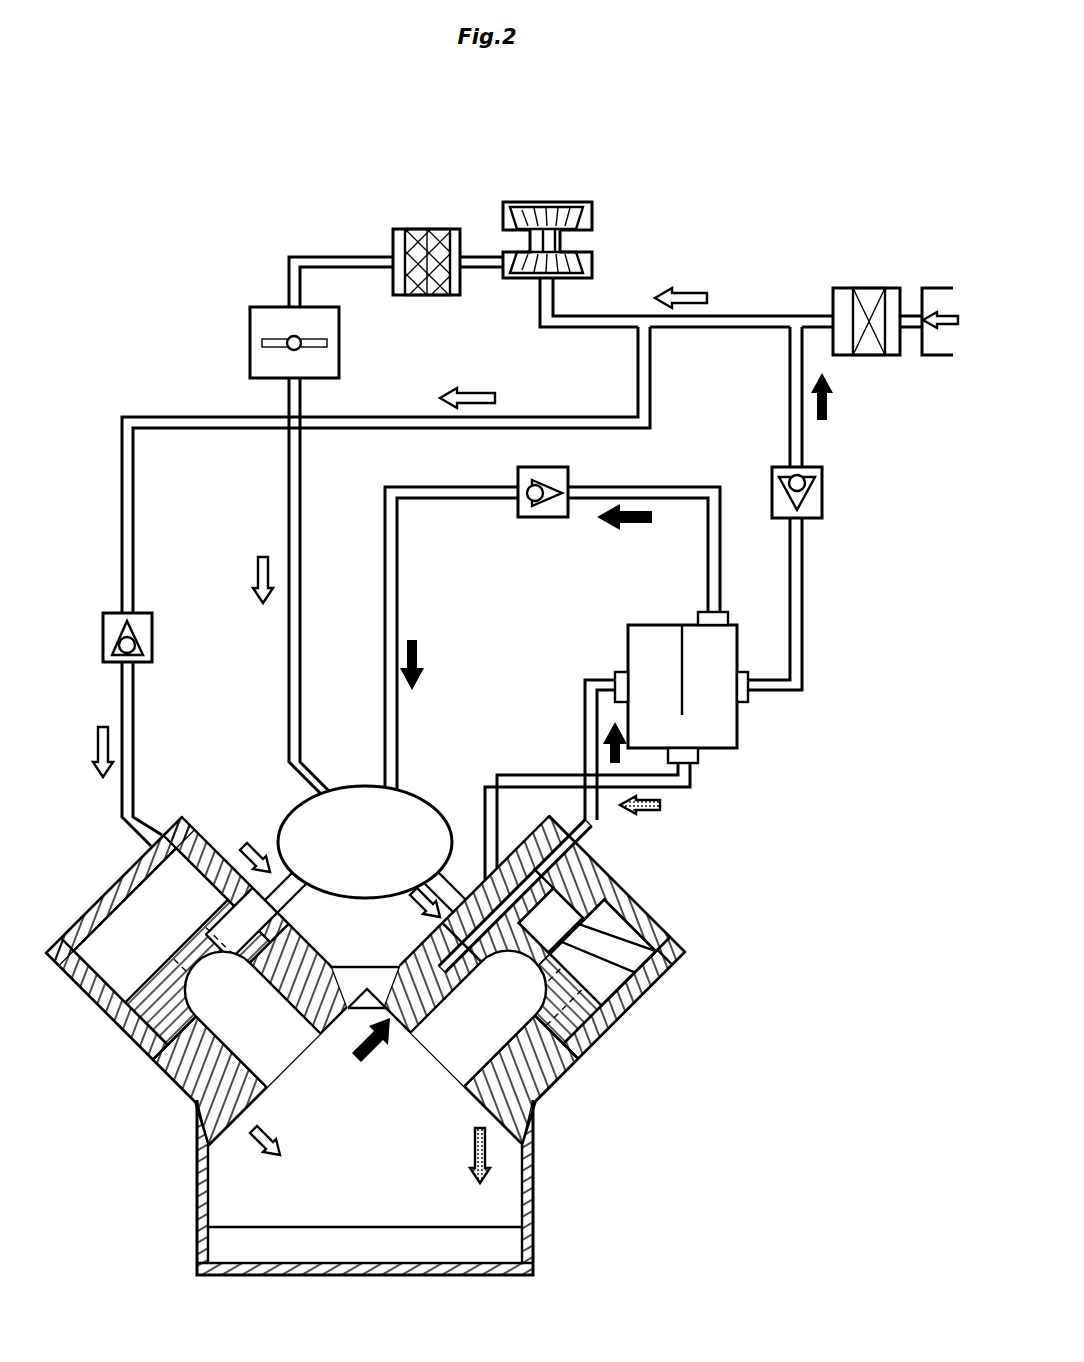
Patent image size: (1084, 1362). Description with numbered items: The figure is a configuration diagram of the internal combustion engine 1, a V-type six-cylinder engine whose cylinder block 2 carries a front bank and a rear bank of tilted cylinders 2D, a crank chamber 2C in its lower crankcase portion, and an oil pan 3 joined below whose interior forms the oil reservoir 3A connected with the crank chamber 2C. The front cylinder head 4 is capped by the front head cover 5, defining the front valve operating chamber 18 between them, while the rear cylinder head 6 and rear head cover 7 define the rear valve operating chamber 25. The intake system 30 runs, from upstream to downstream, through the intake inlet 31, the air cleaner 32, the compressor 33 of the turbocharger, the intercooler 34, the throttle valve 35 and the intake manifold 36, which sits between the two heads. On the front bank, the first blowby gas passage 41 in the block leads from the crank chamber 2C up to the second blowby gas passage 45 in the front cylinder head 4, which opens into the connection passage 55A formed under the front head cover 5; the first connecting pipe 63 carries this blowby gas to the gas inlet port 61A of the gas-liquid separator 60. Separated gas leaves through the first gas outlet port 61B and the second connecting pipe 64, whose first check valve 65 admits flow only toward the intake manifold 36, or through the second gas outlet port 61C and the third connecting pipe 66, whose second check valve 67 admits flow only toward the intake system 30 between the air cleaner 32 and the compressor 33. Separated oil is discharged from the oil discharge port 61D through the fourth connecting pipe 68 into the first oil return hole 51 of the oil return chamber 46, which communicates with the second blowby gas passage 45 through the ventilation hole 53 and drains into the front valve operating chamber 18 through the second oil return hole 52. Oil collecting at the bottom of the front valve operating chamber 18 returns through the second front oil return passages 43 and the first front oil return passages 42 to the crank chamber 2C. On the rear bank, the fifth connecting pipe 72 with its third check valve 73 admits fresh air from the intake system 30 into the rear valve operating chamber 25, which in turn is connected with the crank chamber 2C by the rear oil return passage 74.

The internal combustion engine 1 is at (262, 131).
The intake system 30 is at (735, 179).
The intake inlet 31 is at (941, 288).
The air cleaner 32 is at (846, 288).
The compressor 33 is at (594, 266).
The intercooler 34 is at (415, 229).
The throttle valve 35 is at (250, 328).
The intake manifold 36 is at (290, 812).
The fifth connecting pipe 72 is at (122, 530).
The third check valve 73 is at (103, 645).
The second connecting pipe 64 is at (721, 505).
The first check valve 65 is at (545, 517).
The third connecting pipe 66 is at (803, 608).
The second check valve 67 is at (823, 496).
The gas-liquid separator 60 is at (738, 740).
The gas inlet port 61A is at (615, 678).
The first gas outlet port 61B is at (729, 616).
The second gas outlet port 61C is at (749, 700).
The oil discharge port 61D is at (699, 760).
The first connecting pipe 63 is at (585, 704).
The fourth connecting pipe 68 is at (497, 790).
The connection passage 55A is at (548, 870).
The second blowby gas passage 45 is at (462, 880).
The first oil return hole 51 is at (500, 880).
The ventilation hole 53 is at (572, 900).
The oil return chamber 46 is at (610, 885).
The second oil return hole 52 is at (660, 938).
The front head cover 5 is at (652, 950).
The front cylinder head 4 is at (617, 987).
The second front oil return passage 43 is at (567, 1062).
The first front oil return passage 42 is at (536, 1093).
The first blowby gas passage 41 is at (432, 958).
The front valve operating chamber 18 is at (585, 980).
The rear valve operating chamber 25 is at (135, 951).
The rear head cover 7 is at (65, 960).
The rear cylinder head 6 is at (103, 1000).
The rear oil return passage 74 is at (195, 1072).
The cylinder 2D is at (302, 1022).
The cylinder block 2 is at (197, 1182).
The crank chamber 2C is at (335, 1198).
The oil pan 3 is at (197, 1252).
The oil reservoir 3A is at (335, 1260).